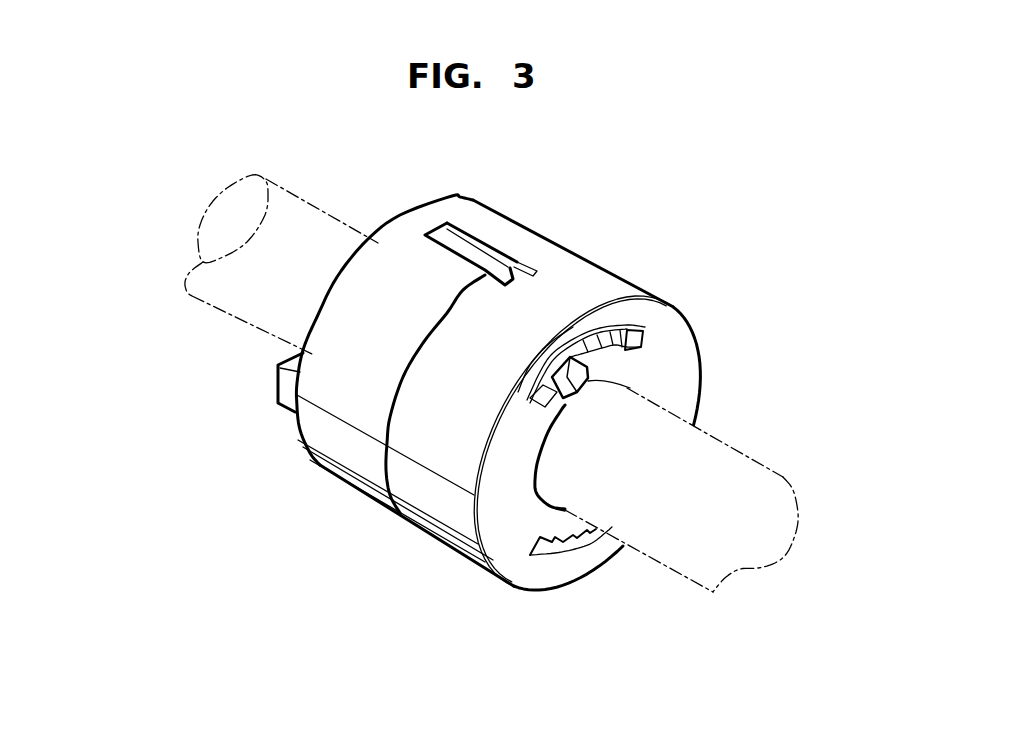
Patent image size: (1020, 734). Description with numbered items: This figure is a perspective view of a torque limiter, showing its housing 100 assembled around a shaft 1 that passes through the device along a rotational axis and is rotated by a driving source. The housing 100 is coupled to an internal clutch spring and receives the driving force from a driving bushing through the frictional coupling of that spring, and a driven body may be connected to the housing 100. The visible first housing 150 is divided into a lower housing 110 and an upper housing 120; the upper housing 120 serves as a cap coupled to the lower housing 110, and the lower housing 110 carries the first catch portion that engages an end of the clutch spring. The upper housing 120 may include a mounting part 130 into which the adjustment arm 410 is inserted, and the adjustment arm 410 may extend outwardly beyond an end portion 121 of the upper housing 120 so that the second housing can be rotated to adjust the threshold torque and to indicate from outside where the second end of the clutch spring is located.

The shaft 1 is at (683, 558).
The housing 100 is at (686, 304).
The lower housing 110 is at (503, 229).
The upper housing 120 is at (592, 277).
The end portion of the upper housing 121 is at (525, 567).
The mounting part 130 is at (634, 339).
The first housing 150 is at (657, 220).
The adjustment arm 410 is at (630, 388).